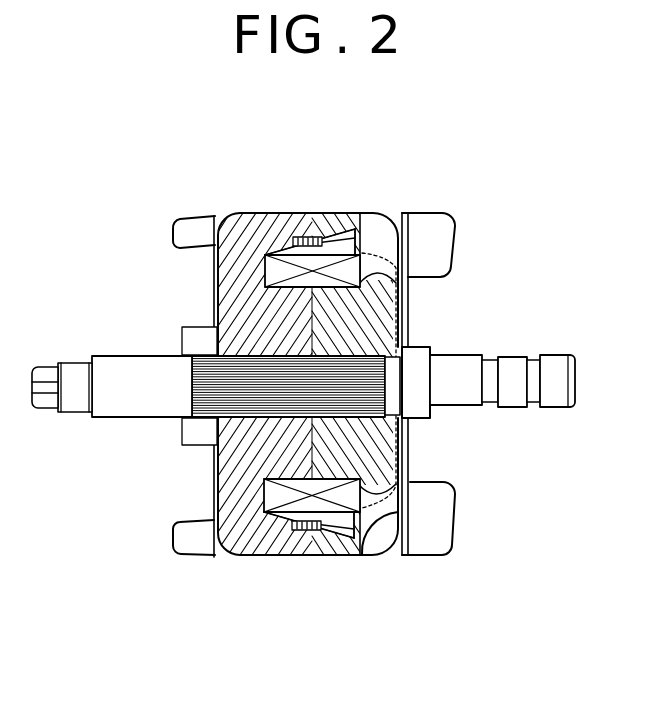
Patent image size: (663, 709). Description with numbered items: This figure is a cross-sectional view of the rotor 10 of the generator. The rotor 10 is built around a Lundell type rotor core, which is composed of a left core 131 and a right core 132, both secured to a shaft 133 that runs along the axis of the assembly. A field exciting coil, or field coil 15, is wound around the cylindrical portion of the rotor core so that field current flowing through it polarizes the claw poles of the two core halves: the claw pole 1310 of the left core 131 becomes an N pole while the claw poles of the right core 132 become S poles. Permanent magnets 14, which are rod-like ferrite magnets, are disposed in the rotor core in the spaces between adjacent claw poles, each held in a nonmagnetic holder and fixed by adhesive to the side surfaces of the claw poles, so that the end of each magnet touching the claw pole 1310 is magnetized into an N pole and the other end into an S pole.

The rotor 10 is at (303, 366).
The left core 131 is at (226, 210).
The claw pole 1310 is at (268, 225).
The right core 132 is at (384, 206).
The shaft 133 is at (458, 377).
The permanent magnets 14 is at (312, 236).
The field coil 15 is at (316, 504).